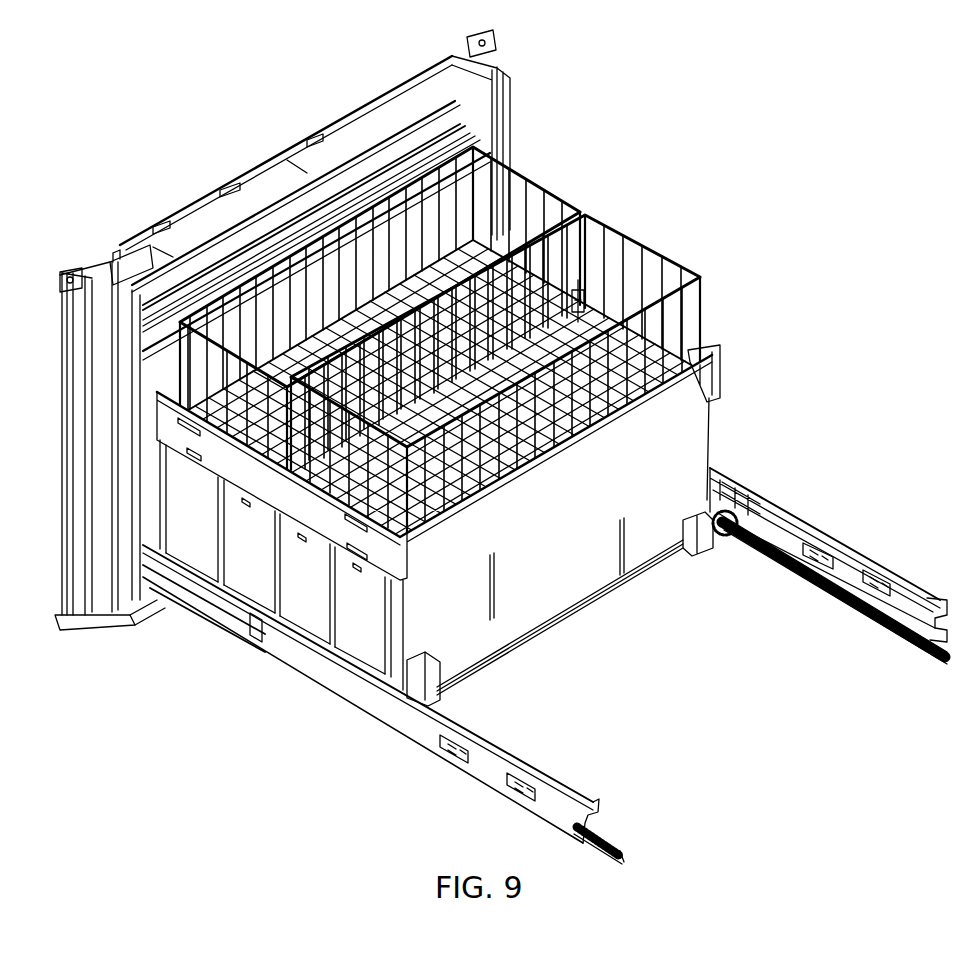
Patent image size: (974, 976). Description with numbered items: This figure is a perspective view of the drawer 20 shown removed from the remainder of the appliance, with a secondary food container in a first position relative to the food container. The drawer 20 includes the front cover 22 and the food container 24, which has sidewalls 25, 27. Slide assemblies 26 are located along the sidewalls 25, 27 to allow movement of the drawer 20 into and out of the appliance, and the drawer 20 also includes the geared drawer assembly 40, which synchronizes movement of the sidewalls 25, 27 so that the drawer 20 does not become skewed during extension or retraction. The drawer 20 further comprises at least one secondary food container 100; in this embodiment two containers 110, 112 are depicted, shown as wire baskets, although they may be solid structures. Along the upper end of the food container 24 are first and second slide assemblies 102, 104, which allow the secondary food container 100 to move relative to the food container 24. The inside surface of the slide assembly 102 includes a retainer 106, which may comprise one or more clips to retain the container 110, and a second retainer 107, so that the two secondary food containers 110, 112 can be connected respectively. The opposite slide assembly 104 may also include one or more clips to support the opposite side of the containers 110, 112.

The drawer 20 is at (826, 116).
The front cover 22 is at (260, 190).
The food container 24 is at (177, 590).
The sidewall 25 is at (333, 692).
The slide assembly 26 is at (863, 525).
The sidewall 27 is at (720, 446).
The geared drawer assembly 40 is at (714, 570).
The secondary food container 100 is at (715, 297).
The first slide assembly 102 is at (740, 360).
The second slide assembly 104 is at (300, 512).
The retainer 106 is at (695, 366).
The retainer 107 is at (580, 290).
The container 110 is at (650, 252).
The container 112 is at (542, 185).